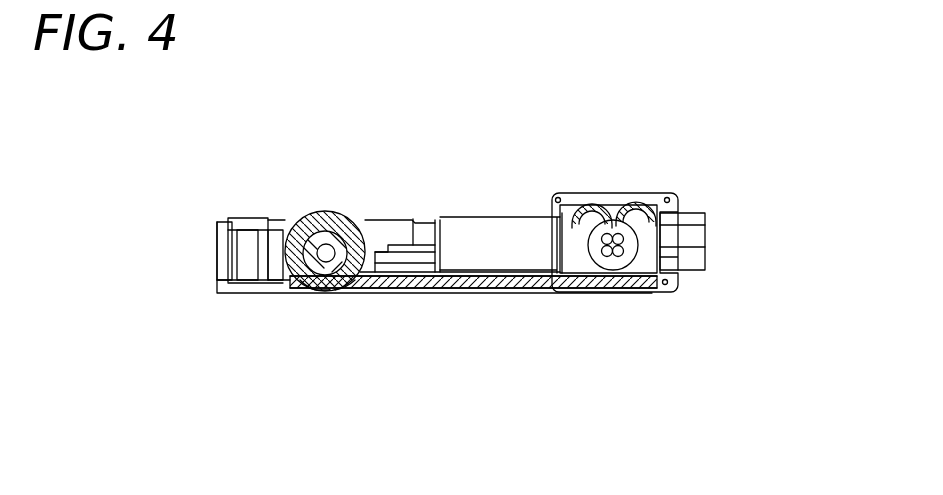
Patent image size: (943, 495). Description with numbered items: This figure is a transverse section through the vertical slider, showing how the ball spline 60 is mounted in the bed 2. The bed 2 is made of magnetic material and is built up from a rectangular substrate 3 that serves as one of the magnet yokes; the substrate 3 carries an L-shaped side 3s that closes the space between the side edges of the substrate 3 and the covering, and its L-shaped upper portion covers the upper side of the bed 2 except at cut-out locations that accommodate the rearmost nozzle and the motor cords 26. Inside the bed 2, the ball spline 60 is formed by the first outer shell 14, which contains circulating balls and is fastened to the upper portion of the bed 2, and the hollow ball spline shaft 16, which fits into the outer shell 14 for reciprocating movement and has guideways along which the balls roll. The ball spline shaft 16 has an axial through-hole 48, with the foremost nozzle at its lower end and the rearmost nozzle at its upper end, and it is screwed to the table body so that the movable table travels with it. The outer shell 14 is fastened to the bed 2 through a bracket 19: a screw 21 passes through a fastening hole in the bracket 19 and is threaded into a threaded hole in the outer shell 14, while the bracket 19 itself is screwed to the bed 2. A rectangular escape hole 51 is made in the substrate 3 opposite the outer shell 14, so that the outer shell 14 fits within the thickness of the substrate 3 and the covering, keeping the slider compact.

The bed 2 is at (494, 283).
The substrate 3 is at (530, 283).
The L-shaped side 3s is at (657, 248).
The first outer shell 14 is at (321, 211).
The ball spline shaft 16 is at (336, 232).
The bracket 19 is at (247, 245).
The screw 21 is at (226, 247).
The motor cord 26 is at (615, 228).
The through-hole 48 is at (318, 287).
The escape hole 51 is at (347, 300).
The ball spline 60 is at (323, 308).